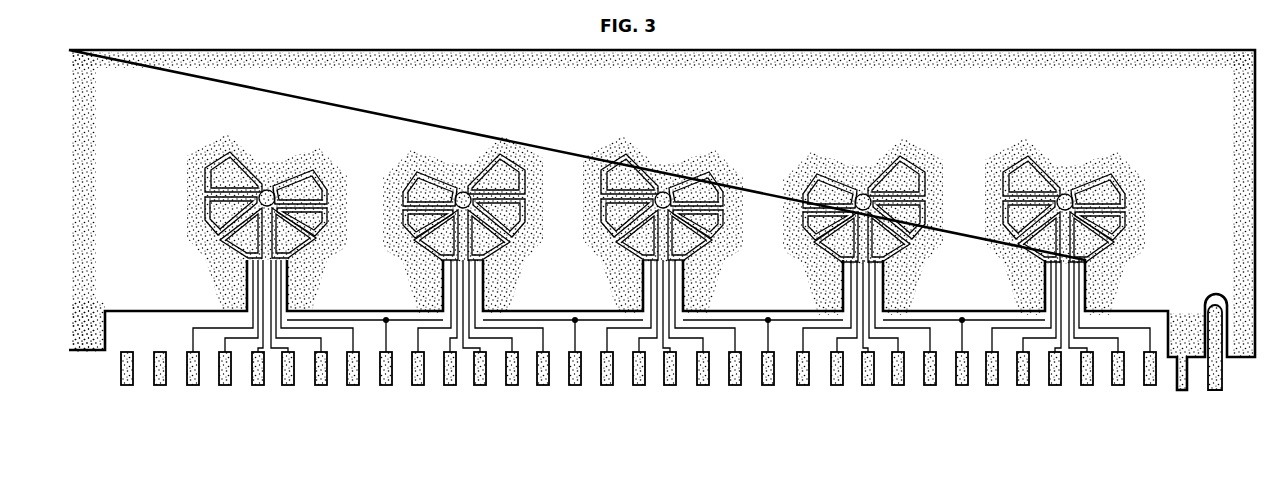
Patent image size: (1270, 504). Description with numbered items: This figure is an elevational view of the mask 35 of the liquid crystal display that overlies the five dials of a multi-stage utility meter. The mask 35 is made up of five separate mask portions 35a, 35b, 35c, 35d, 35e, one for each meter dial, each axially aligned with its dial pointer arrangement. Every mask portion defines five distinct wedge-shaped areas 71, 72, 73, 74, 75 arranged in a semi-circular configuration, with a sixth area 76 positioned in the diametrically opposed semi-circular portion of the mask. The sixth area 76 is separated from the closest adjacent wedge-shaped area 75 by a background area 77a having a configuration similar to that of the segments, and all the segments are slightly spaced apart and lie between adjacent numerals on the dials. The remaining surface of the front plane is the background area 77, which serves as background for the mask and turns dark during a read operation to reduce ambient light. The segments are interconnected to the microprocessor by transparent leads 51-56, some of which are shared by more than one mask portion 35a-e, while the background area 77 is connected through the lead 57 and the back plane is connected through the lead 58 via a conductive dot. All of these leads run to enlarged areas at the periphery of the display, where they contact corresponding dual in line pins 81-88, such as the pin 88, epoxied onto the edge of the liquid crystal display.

The mask 35 is at (1108, 78).
The mask portion 35a is at (282, 166).
The mask portion 35b is at (450, 166).
The mask portion 35c is at (676, 166).
The mask portion 35d is at (852, 166).
The mask portion 35e is at (1078, 166).
The leads 51-56 is at (245, 284).
The lead 57 is at (1180, 322).
The lead 58 is at (1214, 306).
The wedge-shaped area 71 is at (302, 180).
The wedge-shaped area 72 is at (322, 222).
The wedge-shaped area 73 is at (288, 258).
The wedge-shaped area 74 is at (246, 246).
The wedge-shaped area 75 is at (222, 216).
The sixth area 76 is at (222, 160).
The background area 77 is at (830, 72).
The background area 77a is at (259, 191).
The dual in line pins 81-88 is at (283, 6).
The dual in line pin 88 is at (156, 392).